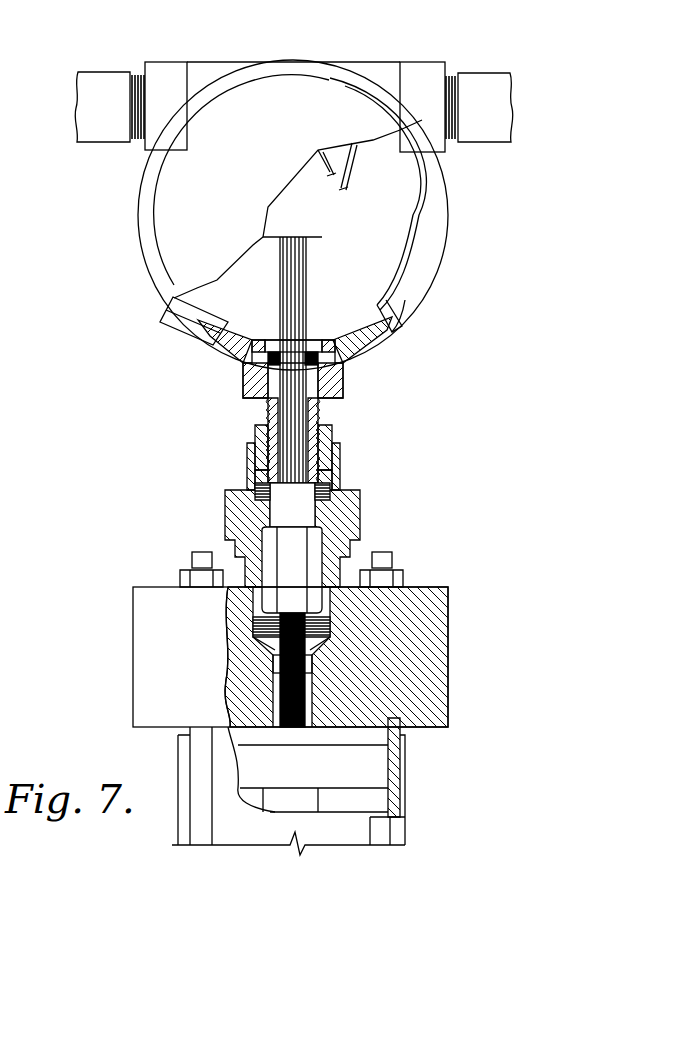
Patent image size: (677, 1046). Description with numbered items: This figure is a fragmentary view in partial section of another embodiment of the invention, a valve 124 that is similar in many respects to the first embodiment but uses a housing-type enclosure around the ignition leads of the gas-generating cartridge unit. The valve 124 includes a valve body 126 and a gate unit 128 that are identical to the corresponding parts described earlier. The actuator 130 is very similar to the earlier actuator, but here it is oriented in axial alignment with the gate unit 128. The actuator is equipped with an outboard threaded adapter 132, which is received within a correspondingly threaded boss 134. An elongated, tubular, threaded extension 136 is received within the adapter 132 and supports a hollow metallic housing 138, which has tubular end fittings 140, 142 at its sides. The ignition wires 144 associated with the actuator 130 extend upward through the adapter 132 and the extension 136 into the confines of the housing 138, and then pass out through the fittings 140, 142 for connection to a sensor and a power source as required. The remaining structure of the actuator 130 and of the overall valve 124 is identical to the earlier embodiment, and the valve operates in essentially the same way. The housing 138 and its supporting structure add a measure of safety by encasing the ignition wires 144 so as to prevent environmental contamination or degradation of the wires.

The valve 124 is at (487, 247).
The valve body 126 is at (460, 590).
The gate unit 128 is at (410, 767).
The actuator 130 is at (413, 481).
The threaded adapter 132 is at (332, 432).
The threaded boss 134 is at (245, 463).
The threaded extension 136 is at (268, 409).
The housing 138 is at (378, 335).
The tubular end fitting 140 is at (97, 95).
The tubular end fitting 142 is at (481, 100).
The ignition wires 144 is at (318, 296).